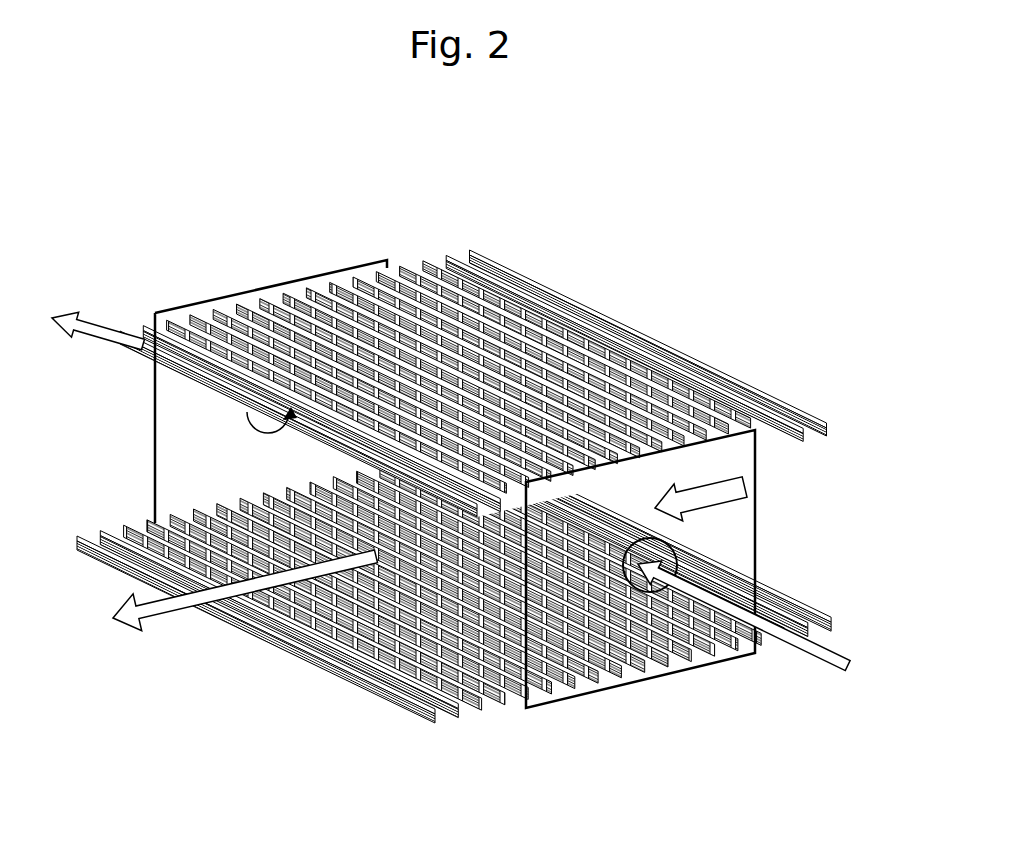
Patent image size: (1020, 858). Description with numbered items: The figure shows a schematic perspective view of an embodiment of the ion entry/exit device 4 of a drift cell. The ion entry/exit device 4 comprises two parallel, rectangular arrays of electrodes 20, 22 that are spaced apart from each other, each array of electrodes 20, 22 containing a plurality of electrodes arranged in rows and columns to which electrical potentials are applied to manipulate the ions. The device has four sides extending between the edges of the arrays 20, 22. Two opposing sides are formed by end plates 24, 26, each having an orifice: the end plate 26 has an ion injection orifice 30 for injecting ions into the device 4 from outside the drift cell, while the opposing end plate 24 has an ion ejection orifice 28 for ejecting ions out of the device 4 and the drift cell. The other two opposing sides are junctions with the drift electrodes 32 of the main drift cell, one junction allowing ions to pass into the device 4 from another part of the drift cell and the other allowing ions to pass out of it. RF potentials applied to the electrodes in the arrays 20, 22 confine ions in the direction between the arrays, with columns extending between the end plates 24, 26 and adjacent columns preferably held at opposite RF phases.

The ion entry/exit device 4 is at (461, 456).
The array of electrodes 20 is at (610, 388).
The array of electrodes 22 is at (474, 612).
The end plate 24 is at (170, 397).
The end plate 26 is at (738, 512).
The ion ejection orifice 28 is at (263, 432).
The ion injection orifice 30 is at (670, 535).
The drift electrodes 32 is at (827, 620).